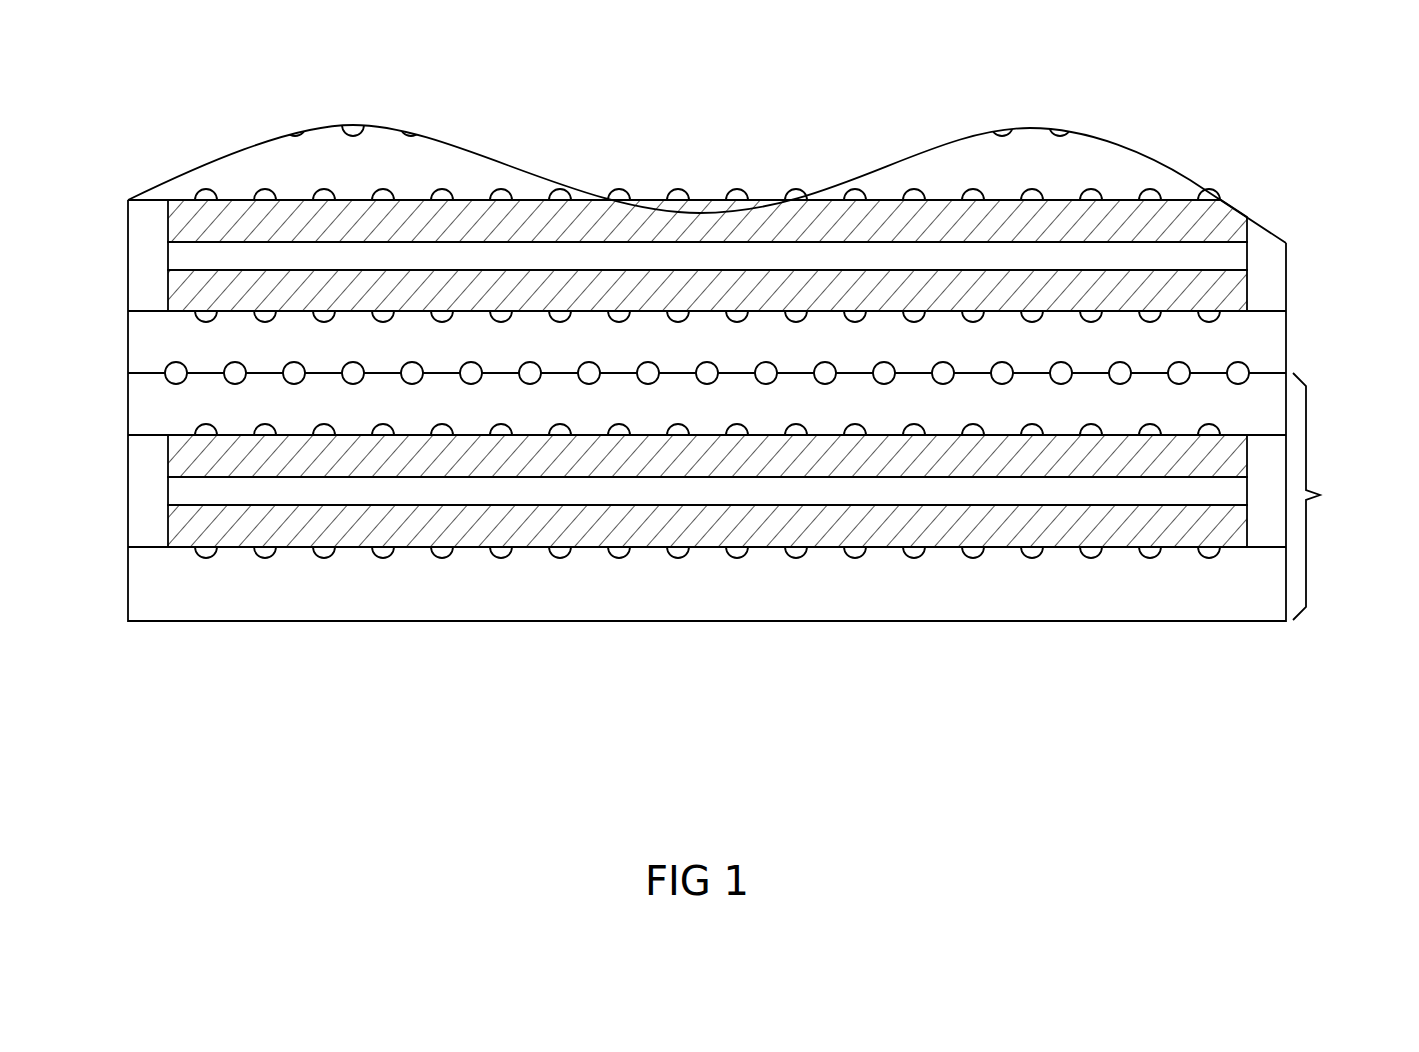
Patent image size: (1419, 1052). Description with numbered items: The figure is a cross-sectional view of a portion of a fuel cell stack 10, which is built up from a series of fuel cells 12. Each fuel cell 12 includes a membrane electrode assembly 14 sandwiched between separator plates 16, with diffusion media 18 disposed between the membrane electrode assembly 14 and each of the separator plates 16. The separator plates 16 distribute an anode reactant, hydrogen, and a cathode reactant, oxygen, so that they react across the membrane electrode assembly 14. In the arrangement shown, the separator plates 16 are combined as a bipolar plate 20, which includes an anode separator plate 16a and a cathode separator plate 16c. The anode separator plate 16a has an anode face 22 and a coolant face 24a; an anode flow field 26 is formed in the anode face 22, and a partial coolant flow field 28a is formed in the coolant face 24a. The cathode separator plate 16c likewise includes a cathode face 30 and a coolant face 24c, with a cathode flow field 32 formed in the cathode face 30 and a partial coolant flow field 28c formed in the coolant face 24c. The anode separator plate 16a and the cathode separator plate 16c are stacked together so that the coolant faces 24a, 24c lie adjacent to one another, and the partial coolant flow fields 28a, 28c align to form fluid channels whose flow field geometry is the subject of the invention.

The fuel cell stack 10 is at (1317, 133).
The fuel cell 12 is at (1325, 496).
The membrane electrode assembly 14 is at (187, 255).
The separator plate 16 is at (1247, 608).
The anode separator plate 16a is at (1280, 335).
The cathode separator plate 16c is at (155, 395).
The diffusion media 18 is at (1233, 217).
The bipolar plate 20 is at (1287, 348).
The anode face 22 is at (243, 312).
The coolant face 24a is at (1212, 378).
The coolant face 24c is at (205, 366).
The anode flow field 26 is at (1143, 323).
The partial coolant flow field 28a is at (702, 363).
The partial coolant flow field 28c is at (643, 385).
The cathode face 30 is at (237, 438).
The cathode flow field 32 is at (1027, 428).